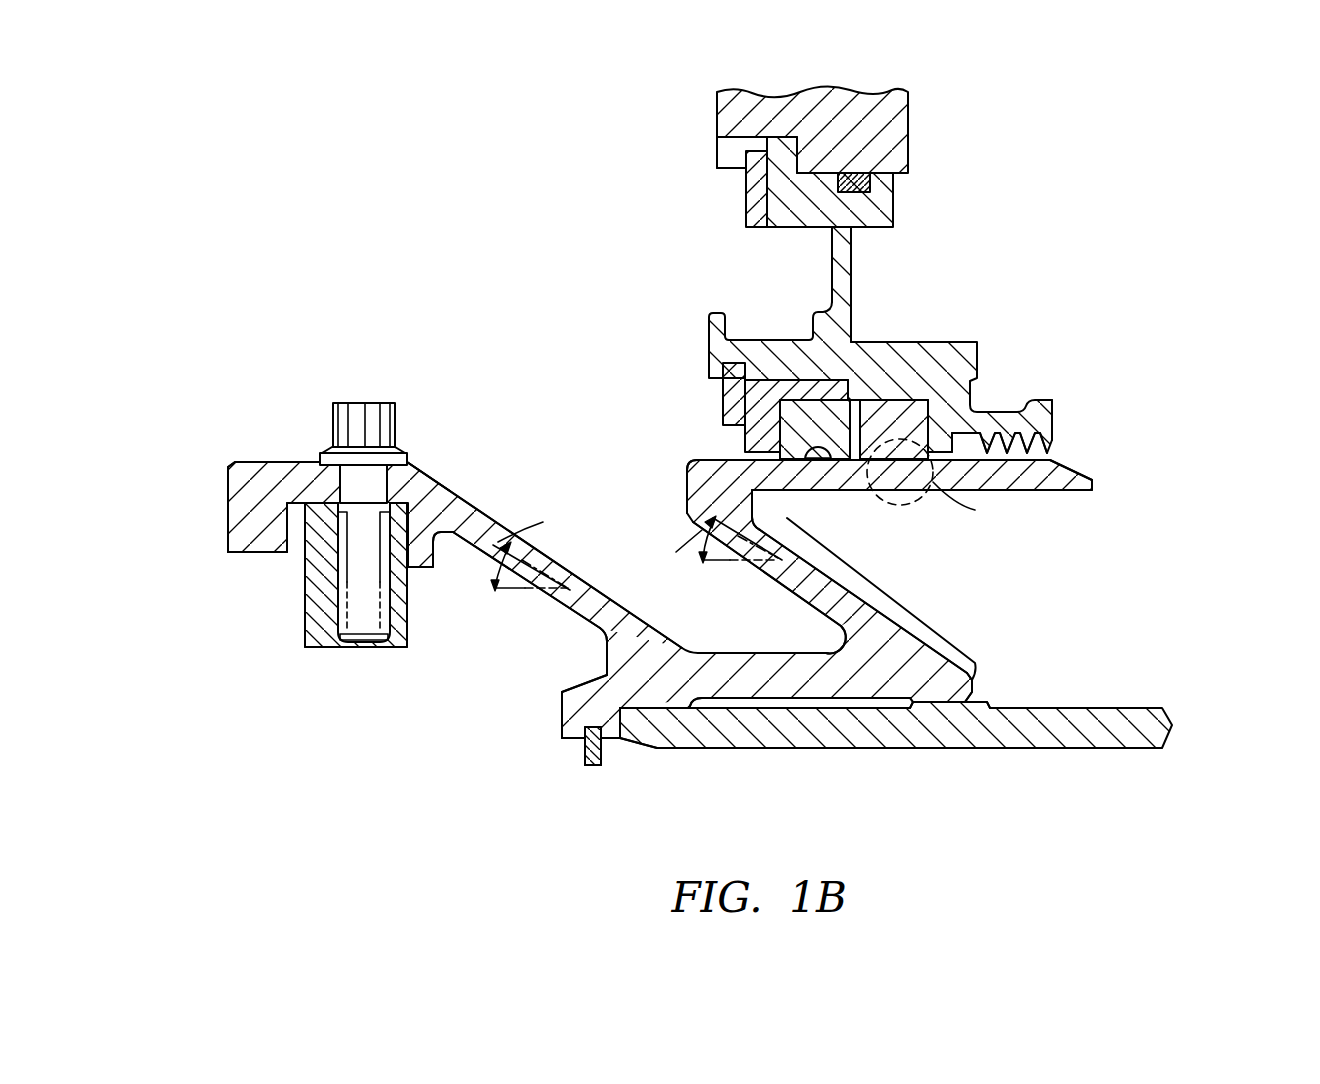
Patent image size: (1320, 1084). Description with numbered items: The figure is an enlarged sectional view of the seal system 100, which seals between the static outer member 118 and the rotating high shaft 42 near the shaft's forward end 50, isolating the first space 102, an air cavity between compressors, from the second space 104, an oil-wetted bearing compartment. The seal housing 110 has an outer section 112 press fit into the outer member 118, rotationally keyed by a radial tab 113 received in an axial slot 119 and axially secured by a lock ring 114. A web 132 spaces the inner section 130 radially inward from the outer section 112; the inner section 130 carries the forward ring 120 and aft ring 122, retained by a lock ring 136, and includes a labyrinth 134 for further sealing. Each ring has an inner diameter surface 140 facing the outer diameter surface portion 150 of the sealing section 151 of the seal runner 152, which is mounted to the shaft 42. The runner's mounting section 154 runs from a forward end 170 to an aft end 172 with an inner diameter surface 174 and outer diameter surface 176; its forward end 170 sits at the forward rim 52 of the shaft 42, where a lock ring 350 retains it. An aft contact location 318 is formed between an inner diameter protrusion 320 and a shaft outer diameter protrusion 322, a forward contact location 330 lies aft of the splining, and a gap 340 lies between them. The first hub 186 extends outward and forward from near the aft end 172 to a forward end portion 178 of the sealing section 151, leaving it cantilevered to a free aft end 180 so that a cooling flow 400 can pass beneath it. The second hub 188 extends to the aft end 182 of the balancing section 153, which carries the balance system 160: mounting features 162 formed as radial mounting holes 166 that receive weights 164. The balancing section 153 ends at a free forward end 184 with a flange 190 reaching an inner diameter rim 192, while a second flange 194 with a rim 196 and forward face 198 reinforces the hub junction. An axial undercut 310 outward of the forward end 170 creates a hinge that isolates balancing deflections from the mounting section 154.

The seal system 100 is at (701, 459).
The first space 102 is at (660, 589).
The second space 104 is at (834, 707).
The seal housing 110 is at (901, 323).
The outer section 112 is at (876, 213).
The radial tab 113 is at (782, 147).
The lock ring 114 is at (743, 207).
The outer member 118 is at (885, 130).
The axial slot 119 is at (727, 152).
The forward ring 120 is at (803, 410).
The aft ring 122 is at (885, 410).
The inner section 130 is at (940, 372).
The web 132 is at (843, 262).
The labyrinth 134 is at (1020, 487).
The lock ring 136 is at (727, 403).
The inner diameter surface 140 is at (903, 473).
The outer diameter surface portion 150 is at (822, 466).
The sealing section 151 is at (1013, 458).
The seal runner 152 is at (1080, 514).
The balancing section 153 is at (318, 484).
The mounting section 154 is at (738, 673).
The balance system 160 is at (381, 515).
The mounting features 162 is at (412, 475).
The weights 164 is at (320, 668).
The mounting holes 166 is at (367, 490).
The forward end 170 is at (570, 700).
The aft end 172 is at (977, 684).
The inner diameter surface 174 is at (795, 700).
The outer diameter surface 176 is at (790, 673).
The forward end portion 178 is at (687, 495).
The free distal aft end 180 is at (1093, 483).
The aft end 182 is at (440, 470).
The free distal forward end 184 is at (232, 492).
The first hub 186 is at (860, 577).
The second hub 188 is at (593, 607).
The flange 190 is at (260, 523).
The inner diameter rim 192 is at (248, 553).
The second flange 194 is at (432, 545).
The rim 196 is at (422, 555).
The forward face 198 is at (427, 553).
The axial undercut 310 is at (603, 650).
The aft contact location 318 is at (935, 709).
The inner diameter protrusion 320 is at (943, 700).
The outer diameter protrusion 322 is at (953, 707).
The forward contact location 330 is at (678, 716).
The gap 340 is at (873, 707).
The lock ring 350 is at (592, 768).
The flow 400 is at (832, 510).
The high shaft 42 is at (1075, 727).
The forward end 50 is at (548, 727).
The forward rim 52 is at (585, 745).